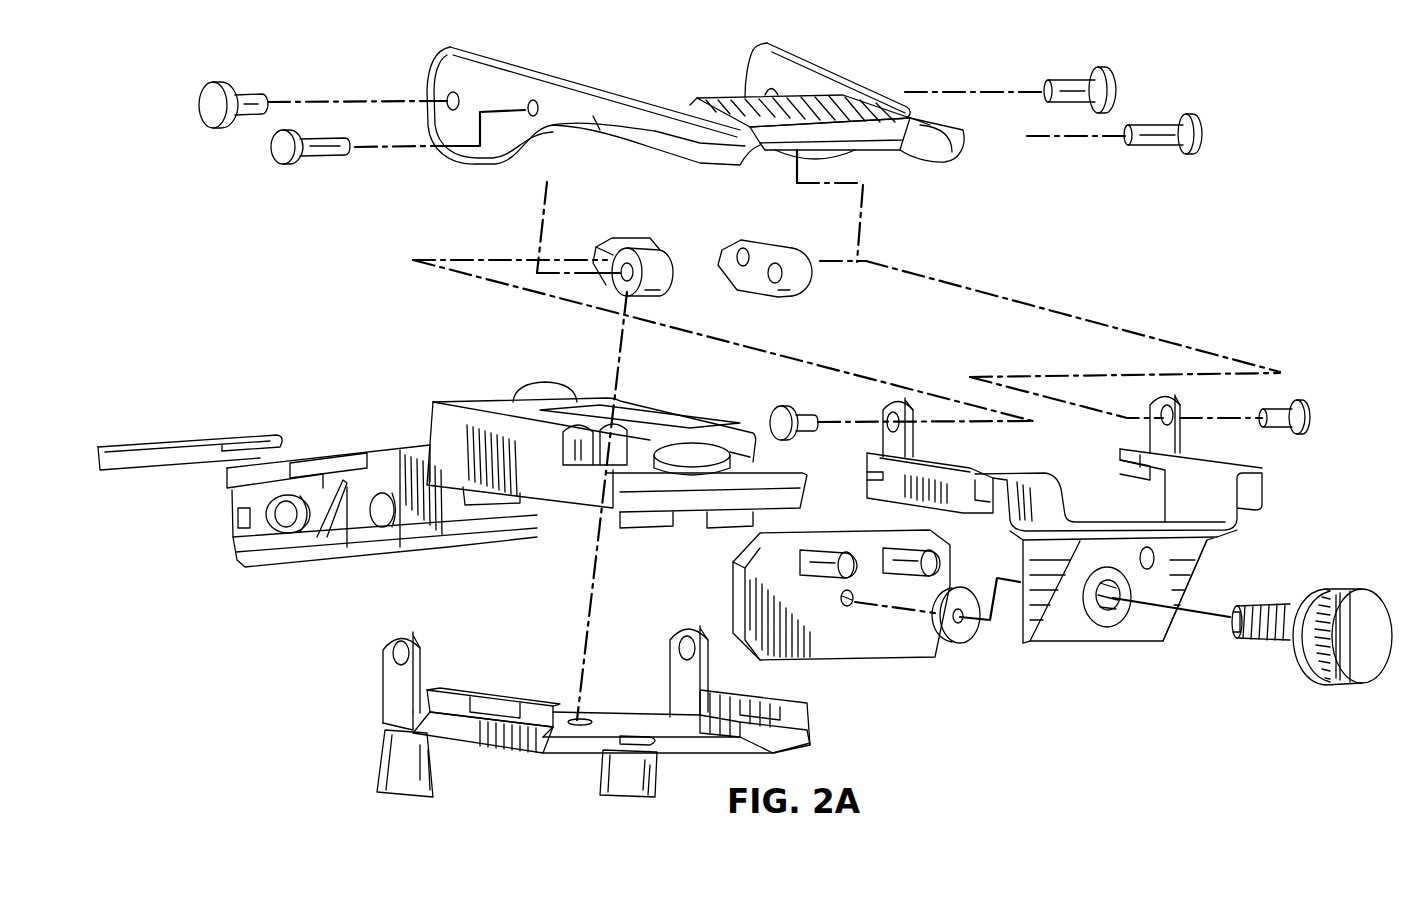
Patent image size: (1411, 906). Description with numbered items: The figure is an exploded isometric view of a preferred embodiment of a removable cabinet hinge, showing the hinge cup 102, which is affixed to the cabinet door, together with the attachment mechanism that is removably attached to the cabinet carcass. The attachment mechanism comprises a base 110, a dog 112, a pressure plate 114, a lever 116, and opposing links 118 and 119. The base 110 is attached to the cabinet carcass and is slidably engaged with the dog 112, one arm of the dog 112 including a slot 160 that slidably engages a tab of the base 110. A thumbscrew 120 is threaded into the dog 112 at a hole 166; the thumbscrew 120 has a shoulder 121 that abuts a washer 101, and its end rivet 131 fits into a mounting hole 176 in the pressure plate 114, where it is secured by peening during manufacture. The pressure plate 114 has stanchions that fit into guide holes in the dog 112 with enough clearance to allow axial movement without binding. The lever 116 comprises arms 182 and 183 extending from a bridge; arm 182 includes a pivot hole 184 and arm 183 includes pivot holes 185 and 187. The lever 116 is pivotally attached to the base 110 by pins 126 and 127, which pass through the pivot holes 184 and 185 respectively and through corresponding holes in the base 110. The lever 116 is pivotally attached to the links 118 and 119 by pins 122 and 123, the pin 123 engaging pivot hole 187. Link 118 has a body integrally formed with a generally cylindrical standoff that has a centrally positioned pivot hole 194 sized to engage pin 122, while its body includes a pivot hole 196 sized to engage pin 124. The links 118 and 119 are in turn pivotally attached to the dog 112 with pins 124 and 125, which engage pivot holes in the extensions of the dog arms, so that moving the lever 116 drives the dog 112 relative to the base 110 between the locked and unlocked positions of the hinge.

The washer 101 is at (960, 636).
The hinge cup 102 is at (170, 435).
The base 110 is at (393, 684).
The dog 112 is at (1063, 628).
The pressure plate 114 is at (887, 650).
The lever 116 is at (947, 155).
The link 118 is at (778, 243).
The link 119 is at (640, 240).
The thumbscrew 120 is at (1350, 588).
The shoulder 121 is at (1237, 640).
The pin 122 is at (1200, 128).
The pin 123 is at (270, 150).
The pin 124 is at (1305, 400).
The pin 125 is at (773, 417).
The pin 126 is at (1113, 78).
The pin 127 is at (198, 105).
The end rivet 131 is at (1236, 604).
The slot 160 is at (1152, 476).
The hole 166 is at (1123, 620).
The mounting hole 176 is at (847, 606).
The arm 182 is at (853, 70).
The arm 183 is at (580, 93).
The pivot hole 184 is at (752, 80).
The pivot hole 185 is at (446, 95).
The pivot hole 187 is at (532, 99).
The pivot hole 194 is at (768, 280).
The pivot hole 196 is at (734, 248).